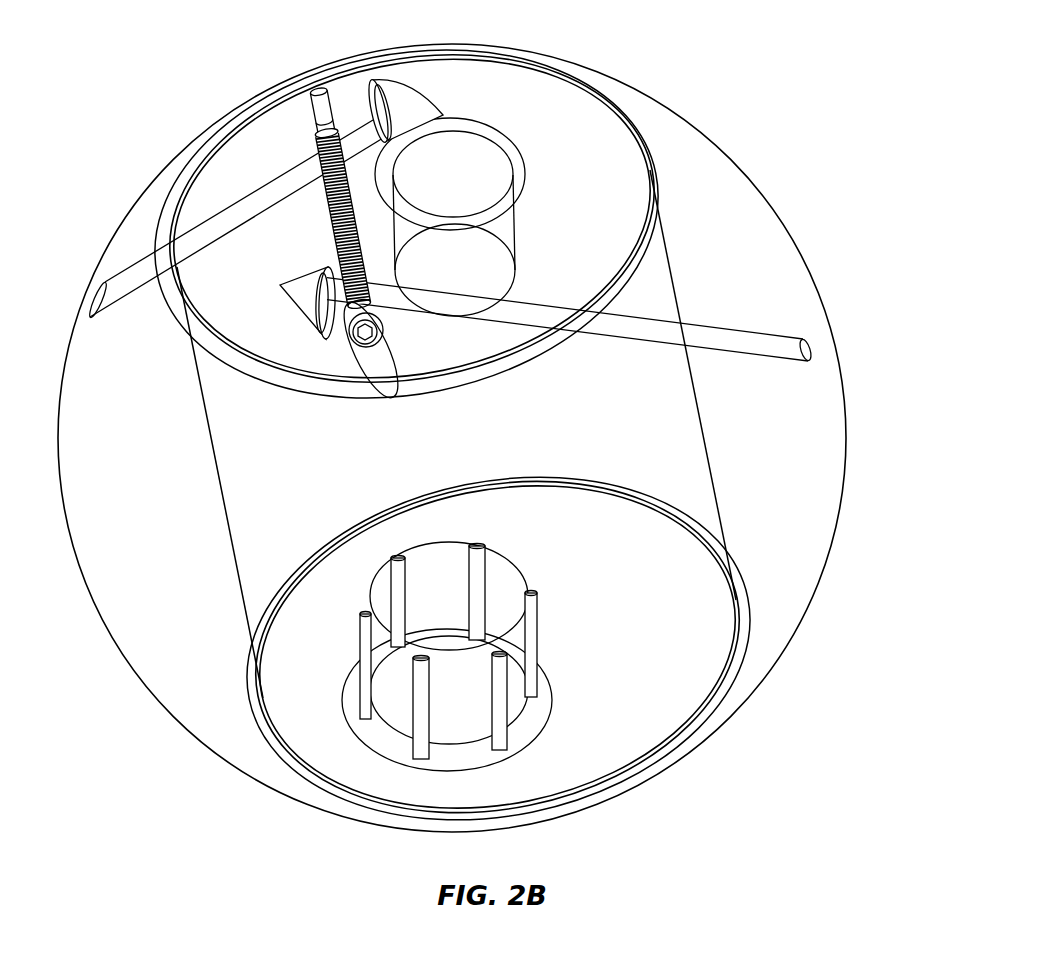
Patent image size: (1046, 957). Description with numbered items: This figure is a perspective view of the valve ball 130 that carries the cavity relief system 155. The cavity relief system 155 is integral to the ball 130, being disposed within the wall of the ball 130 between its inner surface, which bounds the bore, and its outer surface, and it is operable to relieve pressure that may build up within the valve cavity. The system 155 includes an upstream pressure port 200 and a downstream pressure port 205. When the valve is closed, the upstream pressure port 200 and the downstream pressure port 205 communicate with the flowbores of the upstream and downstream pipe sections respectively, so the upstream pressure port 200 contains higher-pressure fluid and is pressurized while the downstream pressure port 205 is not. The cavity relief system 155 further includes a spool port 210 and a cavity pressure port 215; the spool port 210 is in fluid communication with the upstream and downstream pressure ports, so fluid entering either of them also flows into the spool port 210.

The ball 130 is at (697, 170).
The cavity relief system 155 is at (255, 204).
The upstream pressure port 200 is at (196, 232).
The downstream pressure port 205 is at (744, 345).
The spool port 210 is at (343, 218).
The cavity pressure port 215 is at (323, 112).